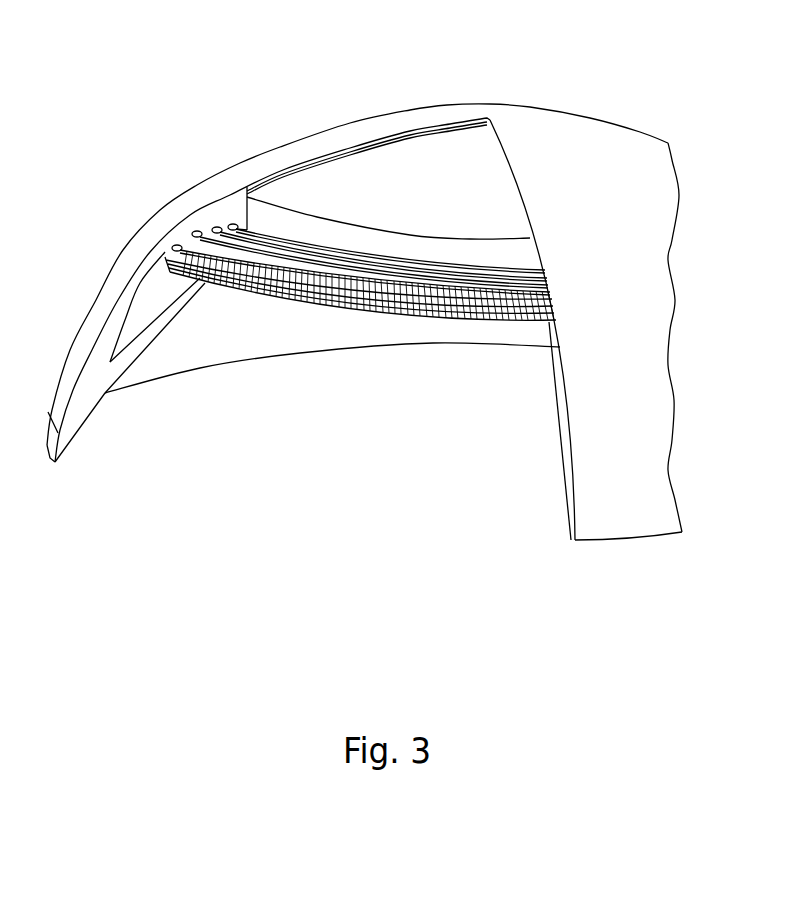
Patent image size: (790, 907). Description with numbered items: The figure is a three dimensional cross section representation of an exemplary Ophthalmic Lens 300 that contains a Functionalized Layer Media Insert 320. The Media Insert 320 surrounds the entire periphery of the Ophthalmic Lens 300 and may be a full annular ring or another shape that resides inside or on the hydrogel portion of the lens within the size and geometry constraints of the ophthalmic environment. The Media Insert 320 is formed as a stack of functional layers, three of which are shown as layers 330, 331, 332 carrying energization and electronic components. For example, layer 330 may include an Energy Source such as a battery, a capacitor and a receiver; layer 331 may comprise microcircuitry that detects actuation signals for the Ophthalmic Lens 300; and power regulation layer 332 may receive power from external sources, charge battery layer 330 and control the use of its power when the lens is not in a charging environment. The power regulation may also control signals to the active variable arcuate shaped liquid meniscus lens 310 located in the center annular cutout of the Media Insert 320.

The Ophthalmic Lens 300 is at (322, 78).
The variable arcuate shaped liquid meniscus lens 310 is at (362, 186).
The Functionalized Layer Media Insert 320 is at (173, 293).
The layer 330 is at (397, 272).
The layer 331 is at (432, 287).
The power regulation layer 332 is at (480, 322).